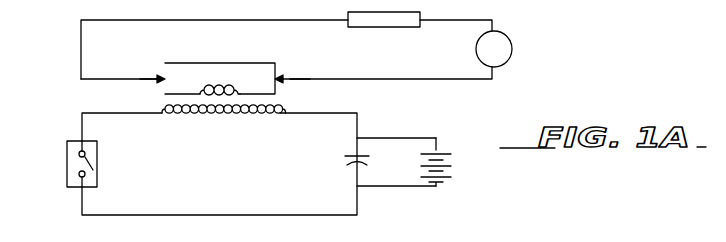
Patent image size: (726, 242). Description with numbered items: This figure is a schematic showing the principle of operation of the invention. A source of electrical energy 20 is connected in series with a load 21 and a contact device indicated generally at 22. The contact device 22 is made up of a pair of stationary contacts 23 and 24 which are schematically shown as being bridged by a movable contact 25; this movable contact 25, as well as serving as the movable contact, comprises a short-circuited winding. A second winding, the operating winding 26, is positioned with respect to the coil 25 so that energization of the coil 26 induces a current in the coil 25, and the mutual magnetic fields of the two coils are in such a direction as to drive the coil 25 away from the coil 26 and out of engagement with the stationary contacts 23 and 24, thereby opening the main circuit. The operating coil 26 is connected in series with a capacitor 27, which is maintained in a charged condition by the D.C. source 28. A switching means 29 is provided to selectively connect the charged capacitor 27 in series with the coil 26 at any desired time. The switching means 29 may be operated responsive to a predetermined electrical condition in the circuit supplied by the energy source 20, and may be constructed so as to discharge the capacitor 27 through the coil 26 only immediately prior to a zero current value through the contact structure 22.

The source of electrical energy 20 is at (512, 50).
The load 21 is at (383, 12).
The contact device 22 is at (222, 62).
The stationary contact 23 is at (162, 70).
The stationary contact 24 is at (278, 78).
The movable contact 25 is at (228, 88).
The operating winding 26 is at (226, 117).
The capacitor 27 is at (352, 166).
The D.C. source 28 is at (438, 149).
The switching means 29 is at (100, 163).